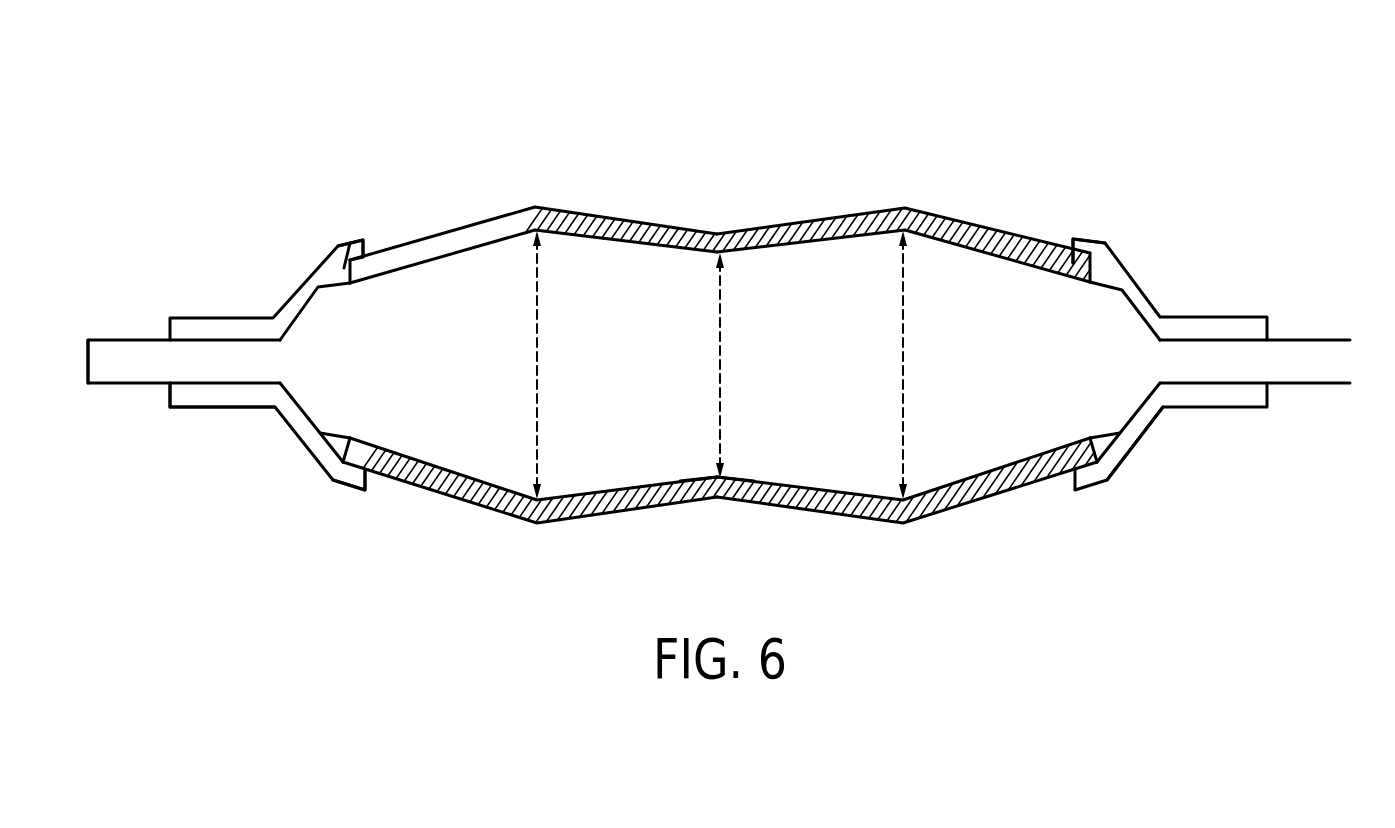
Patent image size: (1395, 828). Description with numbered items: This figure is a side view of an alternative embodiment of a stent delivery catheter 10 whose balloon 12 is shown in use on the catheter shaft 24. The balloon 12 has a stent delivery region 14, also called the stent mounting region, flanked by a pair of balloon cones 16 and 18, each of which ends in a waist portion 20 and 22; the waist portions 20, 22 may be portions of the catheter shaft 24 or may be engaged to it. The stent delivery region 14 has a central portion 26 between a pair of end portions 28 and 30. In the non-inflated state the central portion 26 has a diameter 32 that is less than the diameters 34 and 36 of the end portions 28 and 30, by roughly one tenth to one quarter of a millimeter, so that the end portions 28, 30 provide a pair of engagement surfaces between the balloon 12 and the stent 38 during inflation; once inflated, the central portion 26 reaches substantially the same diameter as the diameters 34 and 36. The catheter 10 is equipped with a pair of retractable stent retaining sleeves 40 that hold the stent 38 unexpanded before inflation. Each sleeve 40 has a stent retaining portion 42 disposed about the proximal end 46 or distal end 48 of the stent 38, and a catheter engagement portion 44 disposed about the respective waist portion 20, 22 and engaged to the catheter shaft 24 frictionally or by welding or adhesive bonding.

The stent delivery catheter 10 is at (764, 138).
The balloon 12 is at (986, 450).
The stent delivery region 14 is at (632, 235).
The balloon cone 16 is at (308, 307).
The balloon cone 18 is at (1133, 315).
The waist portion 20 is at (208, 353).
The waist portion 22 is at (1232, 357).
The catheter shaft 24 is at (98, 325).
The central portion 26 is at (707, 499).
The end portion 28 is at (523, 522).
The end portion 30 is at (892, 522).
The diameter 32 is at (723, 361).
The diameter 34 is at (540, 361).
The diameter 36 is at (905, 361).
The stent 38 is at (827, 222).
The retractable stent retaining sleeve 40 is at (1158, 434).
The stent retaining portion 42 is at (347, 482).
The catheter engagement portion 44 is at (207, 400).
The proximal end 46 is at (356, 259).
The distal end 48 is at (1093, 254).